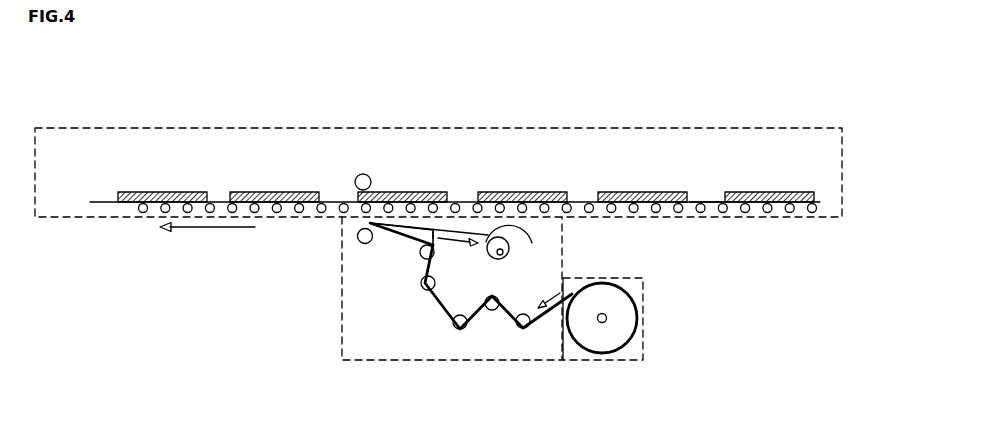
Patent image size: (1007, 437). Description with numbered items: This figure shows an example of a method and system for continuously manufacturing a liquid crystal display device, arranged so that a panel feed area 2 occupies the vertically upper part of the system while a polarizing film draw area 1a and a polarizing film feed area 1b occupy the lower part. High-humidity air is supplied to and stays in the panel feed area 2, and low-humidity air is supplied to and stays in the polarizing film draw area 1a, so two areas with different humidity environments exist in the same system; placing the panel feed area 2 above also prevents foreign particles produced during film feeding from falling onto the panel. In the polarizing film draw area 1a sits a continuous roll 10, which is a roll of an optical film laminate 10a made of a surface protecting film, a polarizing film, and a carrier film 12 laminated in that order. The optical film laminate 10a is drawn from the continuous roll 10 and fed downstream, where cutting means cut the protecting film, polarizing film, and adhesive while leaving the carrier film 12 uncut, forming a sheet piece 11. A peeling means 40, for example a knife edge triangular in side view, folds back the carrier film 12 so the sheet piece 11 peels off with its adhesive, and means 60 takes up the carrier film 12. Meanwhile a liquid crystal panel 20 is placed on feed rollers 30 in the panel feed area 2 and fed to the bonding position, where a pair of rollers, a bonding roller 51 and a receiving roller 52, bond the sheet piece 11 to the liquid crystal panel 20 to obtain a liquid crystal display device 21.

The panel feed area 2 is at (49, 165).
The sheet piece 11 is at (131, 205).
The liquid crystal display device 21 is at (140, 190).
The liquid crystal panel 20 is at (750, 196).
The feed rollers 30 is at (703, 200).
The receiving roller 52 is at (365, 174).
The bonding roller 51 is at (358, 240).
The polarizing film feed area 1b is at (380, 352).
The polarizing film draw area 1a is at (640, 281).
The peeling means 40 is at (418, 235).
The optical film laminate 10a is at (425, 300).
The carrier film 12 is at (519, 241).
The means for taking up the carrier film 60 is at (502, 260).
The continuous roll 10 is at (605, 350).